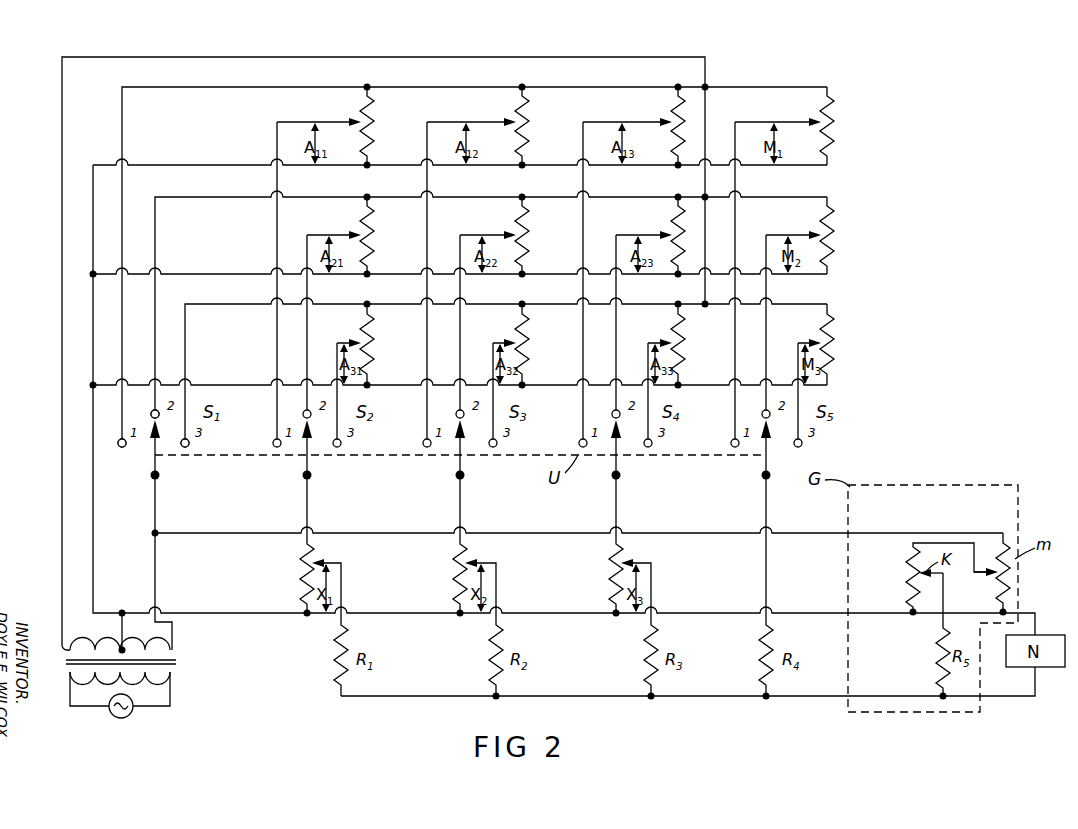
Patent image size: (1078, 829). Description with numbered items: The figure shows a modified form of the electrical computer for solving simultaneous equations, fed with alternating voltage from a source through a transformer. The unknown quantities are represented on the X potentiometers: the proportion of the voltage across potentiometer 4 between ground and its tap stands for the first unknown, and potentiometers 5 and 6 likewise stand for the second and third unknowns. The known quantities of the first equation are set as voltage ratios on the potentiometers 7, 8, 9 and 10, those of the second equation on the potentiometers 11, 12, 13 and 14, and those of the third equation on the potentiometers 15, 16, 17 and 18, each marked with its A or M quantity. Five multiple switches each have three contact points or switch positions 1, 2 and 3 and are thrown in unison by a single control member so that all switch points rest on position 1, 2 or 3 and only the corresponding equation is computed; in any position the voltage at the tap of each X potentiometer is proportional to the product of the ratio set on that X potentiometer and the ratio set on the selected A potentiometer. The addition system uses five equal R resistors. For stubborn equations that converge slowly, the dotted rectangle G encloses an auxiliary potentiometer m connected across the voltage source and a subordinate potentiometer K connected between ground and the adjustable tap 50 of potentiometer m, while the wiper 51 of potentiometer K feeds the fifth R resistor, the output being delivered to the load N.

The switch position 1 is at (128, 436).
The switch position 2 is at (163, 408).
The switch position 3 is at (192, 436).
The potentiometer 4 is at (320, 561).
The potentiometer 5 is at (474, 561).
The potentiometer 6 is at (629, 560).
The potentiometer 7 is at (373, 112).
The potentiometer 8 is at (528, 112).
The potentiometer 9 is at (684, 97).
The potentiometer 10 is at (832, 112).
The potentiometer 11 is at (373, 224).
The potentiometer 12 is at (528, 224).
The potentiometer 13 is at (684, 214).
The potentiometer 14 is at (832, 224).
The potentiometer 15 is at (373, 336).
The potentiometer 16 is at (528, 336).
The potentiometer 17 is at (684, 336).
The potentiometer 18 is at (832, 336).
The adjustable tap 50 is at (997, 578).
The wiper contact of potentiometer K 51 is at (915, 574).